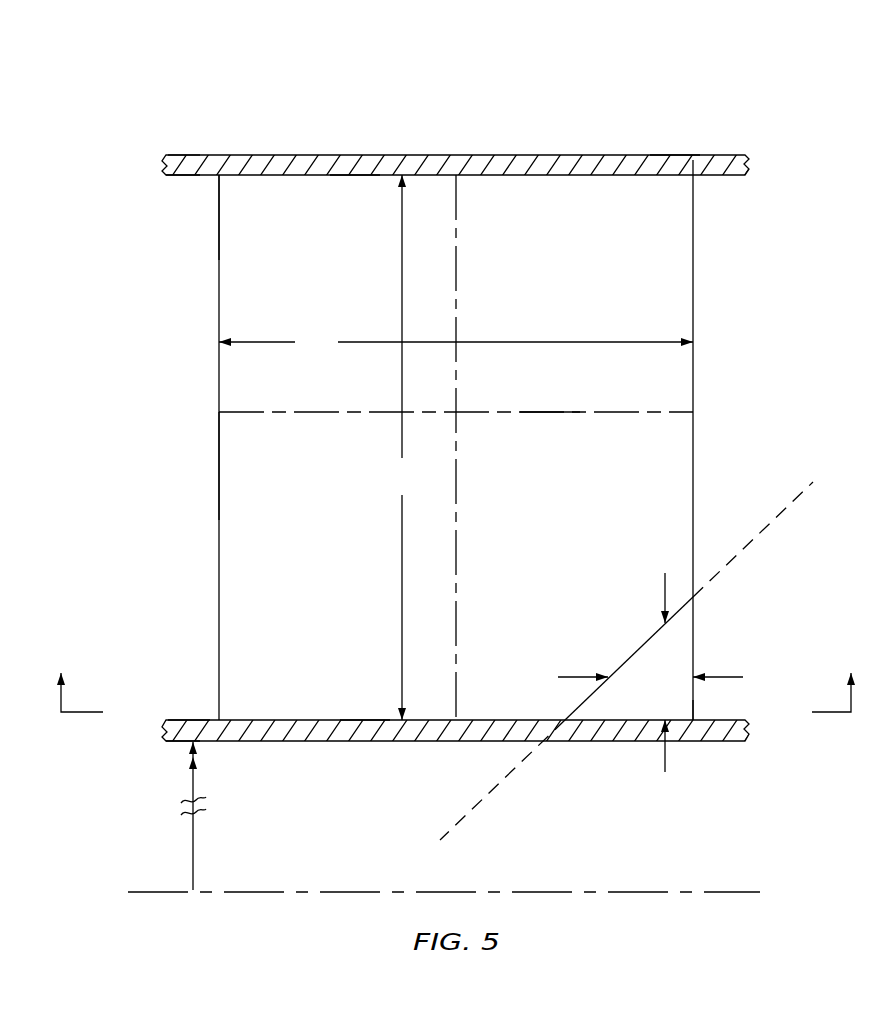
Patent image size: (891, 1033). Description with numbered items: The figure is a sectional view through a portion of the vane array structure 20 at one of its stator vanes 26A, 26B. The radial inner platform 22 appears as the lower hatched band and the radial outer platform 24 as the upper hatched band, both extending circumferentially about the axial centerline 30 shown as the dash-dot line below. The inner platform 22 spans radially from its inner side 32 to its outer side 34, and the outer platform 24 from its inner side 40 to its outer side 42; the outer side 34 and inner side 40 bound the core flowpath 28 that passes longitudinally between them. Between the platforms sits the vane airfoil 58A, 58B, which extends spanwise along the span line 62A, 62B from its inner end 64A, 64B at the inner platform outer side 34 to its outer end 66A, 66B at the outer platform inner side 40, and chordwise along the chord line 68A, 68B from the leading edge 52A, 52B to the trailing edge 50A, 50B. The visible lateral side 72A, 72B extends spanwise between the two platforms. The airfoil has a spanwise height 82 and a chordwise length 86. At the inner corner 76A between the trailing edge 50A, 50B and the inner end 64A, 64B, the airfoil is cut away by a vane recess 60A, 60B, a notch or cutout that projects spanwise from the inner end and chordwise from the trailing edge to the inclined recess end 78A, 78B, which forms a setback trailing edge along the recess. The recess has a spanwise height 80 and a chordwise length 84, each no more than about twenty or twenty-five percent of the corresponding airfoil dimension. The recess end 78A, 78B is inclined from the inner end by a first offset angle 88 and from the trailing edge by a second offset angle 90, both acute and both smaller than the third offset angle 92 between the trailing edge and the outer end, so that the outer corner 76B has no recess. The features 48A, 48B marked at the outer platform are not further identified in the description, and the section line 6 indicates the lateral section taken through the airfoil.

The vane array structure 20 is at (120, 96).
The radial inner platform 22 is at (292, 742).
The radial outer platform 24 is at (297, 152).
The stator vane 26A is at (139, 447).
The stator vane 26B is at (213, 272).
The core flowpath 28 is at (147, 434).
The axial centerline 30 is at (135, 890).
The inner side of inner platform 32 is at (173, 741).
The outer side of inner platform 34 is at (188, 720).
The inner side of outer platform 40 is at (171, 176).
The outer side of outer platform 42 is at (183, 154).
The second wall 48A is at (695, 104).
The second wall 48B is at (672, 142).
The trailing edge 50A is at (766, 447).
The trailing edge 50B is at (695, 275).
The leading edge 52A is at (147, 217).
The leading edge 52B is at (217, 220).
The vane airfoil 58A is at (315, 561).
The vane airfoil 58B is at (362, 575).
The vane recess 60A is at (613, 746).
The vane recess 60B is at (633, 702).
The span line 62A is at (535, 447).
The span line 62B is at (457, 218).
The inner end of vane airfoil 64A is at (350, 762).
The inner end of vane airfoil 64B is at (362, 742).
The outer end of vane airfoil 66A is at (371, 132).
The outer end of vane airfoil 66B is at (352, 175).
The chord line 68A is at (536, 458).
The chord line 68B is at (548, 412).
The lateral side of vane airfoil 72A is at (165, 466).
The lateral side of vane airfoil 72B is at (242, 468).
The inner corner 76A is at (679, 702).
The outer corner 76B is at (690, 170).
The recess end 78A is at (637, 661).
The recess end 78B is at (678, 610).
The spanwise height of vane recess 80 is at (665, 588).
The spanwise height of vane airfoil 82 is at (400, 447).
The chordwise length of vane recess 84 is at (572, 677).
The chordwise length of vane airfoil 86 is at (456, 343).
The first offset angle 88 is at (455, 822).
The second offset angle 90 is at (800, 488).
The third offset angle 92 is at (695, 220).
The section line 6- 6 is at (456, 678).